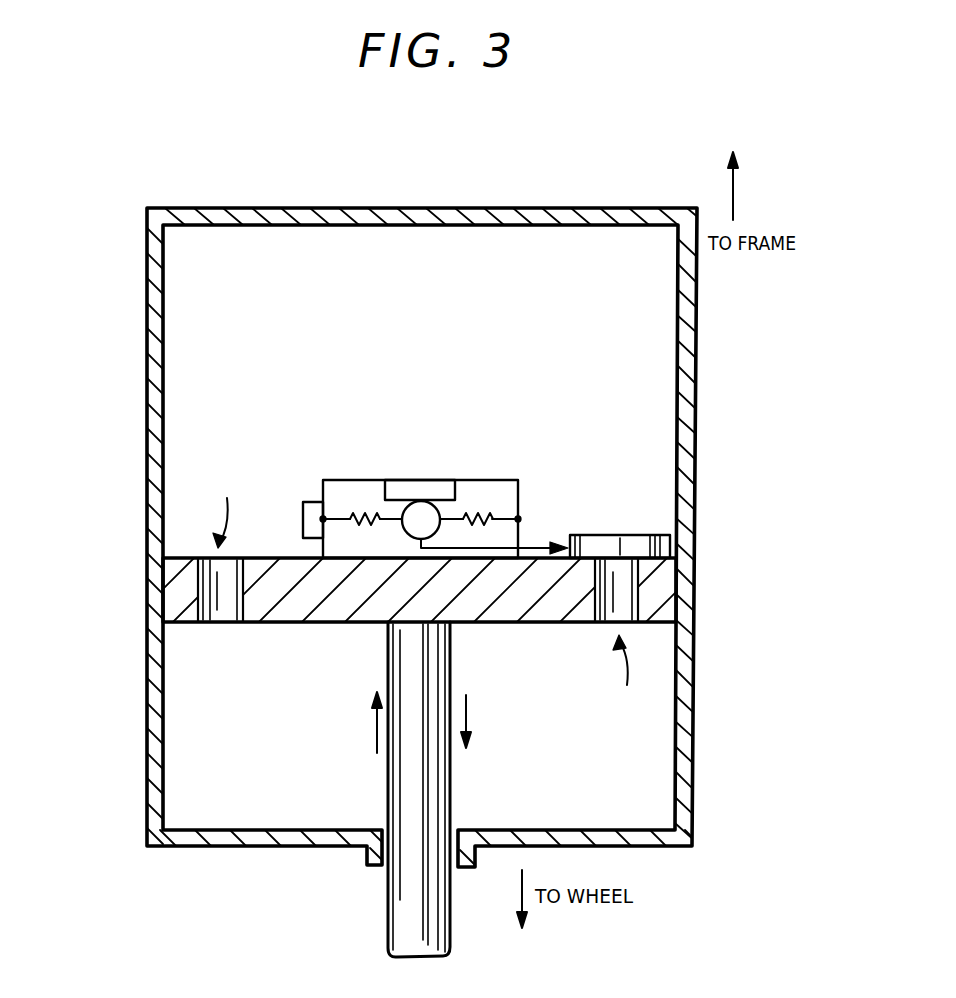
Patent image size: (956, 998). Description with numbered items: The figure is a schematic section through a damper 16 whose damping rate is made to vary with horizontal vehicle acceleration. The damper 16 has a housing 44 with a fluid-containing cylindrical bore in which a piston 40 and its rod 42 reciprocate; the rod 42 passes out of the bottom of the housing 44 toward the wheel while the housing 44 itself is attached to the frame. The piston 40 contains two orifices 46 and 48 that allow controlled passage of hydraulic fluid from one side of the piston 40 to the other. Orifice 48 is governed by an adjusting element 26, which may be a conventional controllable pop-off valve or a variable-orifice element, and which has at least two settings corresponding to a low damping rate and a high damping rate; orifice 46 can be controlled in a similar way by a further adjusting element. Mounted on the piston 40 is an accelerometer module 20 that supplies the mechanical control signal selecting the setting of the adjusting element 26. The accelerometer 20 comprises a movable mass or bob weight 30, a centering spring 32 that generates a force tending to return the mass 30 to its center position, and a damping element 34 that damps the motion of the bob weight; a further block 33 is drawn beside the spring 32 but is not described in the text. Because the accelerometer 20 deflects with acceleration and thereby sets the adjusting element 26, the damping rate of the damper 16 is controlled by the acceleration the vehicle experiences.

The damper 16 is at (697, 413).
The accelerometer module 20 is at (416, 494).
The adjusting element 26 is at (615, 535).
The mass 30 is at (421, 520).
The centering spring 32 is at (518, 519).
The resistor block 33 is at (303, 503).
The damping element 34 is at (413, 488).
The piston 40 is at (163, 593).
The rod 42 is at (388, 912).
The housing 44 is at (147, 490).
The orifice 46 is at (228, 622).
The orifice 48 is at (632, 622).